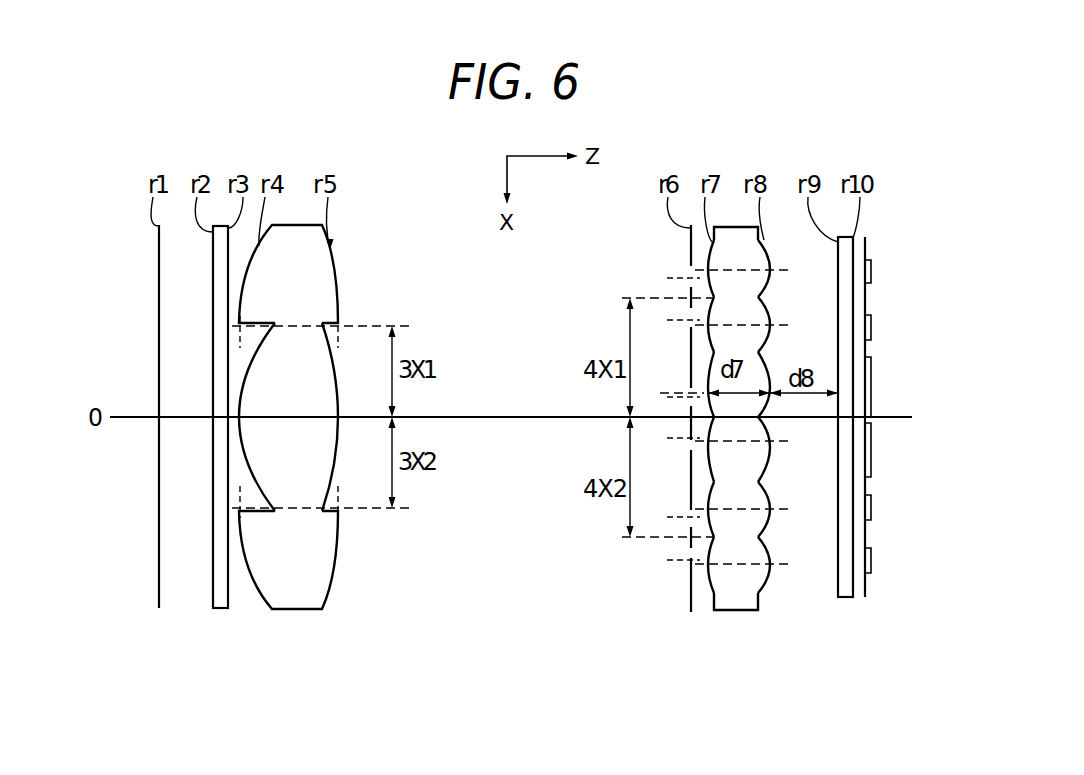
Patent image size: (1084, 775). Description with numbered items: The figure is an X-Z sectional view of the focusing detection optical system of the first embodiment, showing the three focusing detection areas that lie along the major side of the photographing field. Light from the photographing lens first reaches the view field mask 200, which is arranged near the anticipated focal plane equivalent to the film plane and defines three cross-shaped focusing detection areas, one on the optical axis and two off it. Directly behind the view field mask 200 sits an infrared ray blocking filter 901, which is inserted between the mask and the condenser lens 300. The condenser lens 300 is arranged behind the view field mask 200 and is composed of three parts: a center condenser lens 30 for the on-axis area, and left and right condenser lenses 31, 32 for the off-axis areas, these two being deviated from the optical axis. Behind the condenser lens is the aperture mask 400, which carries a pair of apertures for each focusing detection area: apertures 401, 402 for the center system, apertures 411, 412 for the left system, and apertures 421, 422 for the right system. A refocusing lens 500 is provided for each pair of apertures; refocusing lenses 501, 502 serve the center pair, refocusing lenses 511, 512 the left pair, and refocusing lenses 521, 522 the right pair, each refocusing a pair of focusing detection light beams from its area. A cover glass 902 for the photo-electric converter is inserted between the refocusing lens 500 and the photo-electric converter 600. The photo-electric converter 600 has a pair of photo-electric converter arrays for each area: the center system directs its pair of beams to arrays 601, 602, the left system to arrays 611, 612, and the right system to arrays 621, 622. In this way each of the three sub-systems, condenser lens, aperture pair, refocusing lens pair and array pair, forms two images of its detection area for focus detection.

The view field mask 200 is at (160, 590).
The infrared ray blocking filter 901 is at (223, 610).
The condenser lens 300 is at (308, 433).
The condenser lens 31 is at (338, 316).
The condenser lens 30 is at (339, 388).
The condenser lens 32 is at (338, 533).
The aperture mask 400 is at (668, 438).
The aperture 411 is at (692, 273).
The aperture 412 is at (690, 320).
The aperture 401 is at (690, 392).
The aperture 402 is at (690, 440).
The aperture 421 is at (692, 514).
The aperture 422 is at (690, 560).
The refocusing lens 500 is at (766, 439).
The refocusing lens 511 is at (770, 268).
The refocusing lens 512 is at (770, 315).
The refocusing lens 501 is at (763, 365).
The refocusing lens 502 is at (770, 450).
The refocusing lens 521 is at (770, 506).
The refocusing lens 522 is at (770, 578).
The cover glass 902 is at (842, 599).
The photo-electric converter 600 is at (891, 444).
The photo-electric converter array 611 is at (872, 275).
The photo-electric converter array 612 is at (872, 330).
The photo-electric converter array 601 is at (872, 378).
The photo-electric converter array 602 is at (872, 460).
The photo-electric converter array 621 is at (872, 508).
The photo-electric converter array 622 is at (872, 564).